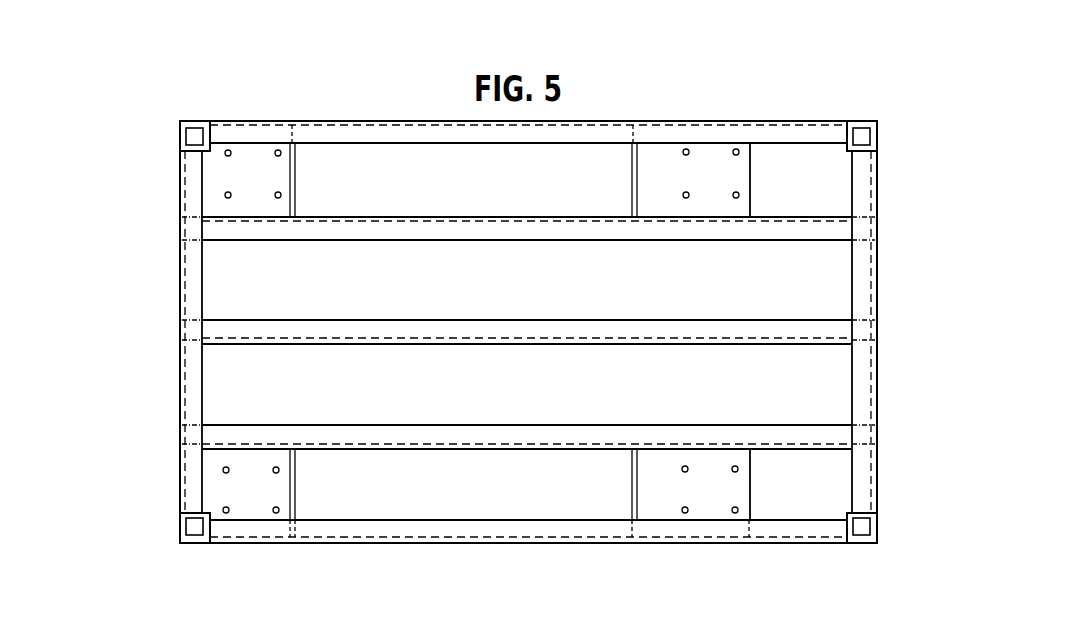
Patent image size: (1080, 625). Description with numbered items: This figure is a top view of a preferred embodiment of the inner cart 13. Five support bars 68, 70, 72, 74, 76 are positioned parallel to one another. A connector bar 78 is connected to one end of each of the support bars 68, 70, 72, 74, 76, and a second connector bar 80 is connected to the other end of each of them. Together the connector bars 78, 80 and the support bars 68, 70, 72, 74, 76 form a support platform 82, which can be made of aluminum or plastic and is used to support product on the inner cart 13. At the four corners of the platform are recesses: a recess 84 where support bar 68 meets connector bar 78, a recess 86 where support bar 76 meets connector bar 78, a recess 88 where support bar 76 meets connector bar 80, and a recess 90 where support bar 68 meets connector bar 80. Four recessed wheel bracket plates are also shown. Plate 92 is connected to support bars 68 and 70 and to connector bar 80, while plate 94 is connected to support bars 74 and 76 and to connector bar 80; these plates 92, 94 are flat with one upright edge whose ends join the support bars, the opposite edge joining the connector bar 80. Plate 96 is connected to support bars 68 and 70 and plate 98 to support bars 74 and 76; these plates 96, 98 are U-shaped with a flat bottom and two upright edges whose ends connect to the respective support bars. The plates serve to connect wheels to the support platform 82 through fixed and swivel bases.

The inner cart 13 is at (972, 196).
The support bar 68 is at (250, 131).
The support bar 70 is at (366, 227).
The support bar 72 is at (330, 327).
The support bar 74 is at (327, 430).
The support bar 76 is at (385, 528).
The connector bar 78 is at (853, 268).
The connector bar 80 is at (183, 282).
The support platform 82 is at (912, 412).
The recess 84 is at (863, 130).
The recess 86 is at (866, 527).
The recess 88 is at (196, 535).
The recess 90 is at (195, 132).
The recessed wheel bracket plate 92 is at (293, 188).
The recessed wheel bracket plate 94 is at (292, 488).
The recessed wheel bracket plate 96 is at (727, 180).
The recessed wheel bracket plate 98 is at (752, 482).